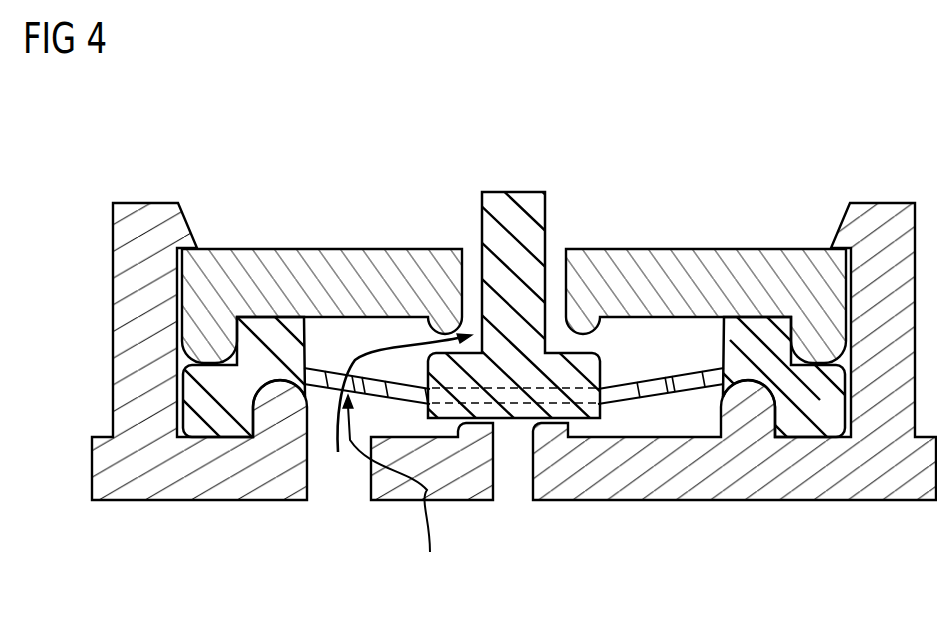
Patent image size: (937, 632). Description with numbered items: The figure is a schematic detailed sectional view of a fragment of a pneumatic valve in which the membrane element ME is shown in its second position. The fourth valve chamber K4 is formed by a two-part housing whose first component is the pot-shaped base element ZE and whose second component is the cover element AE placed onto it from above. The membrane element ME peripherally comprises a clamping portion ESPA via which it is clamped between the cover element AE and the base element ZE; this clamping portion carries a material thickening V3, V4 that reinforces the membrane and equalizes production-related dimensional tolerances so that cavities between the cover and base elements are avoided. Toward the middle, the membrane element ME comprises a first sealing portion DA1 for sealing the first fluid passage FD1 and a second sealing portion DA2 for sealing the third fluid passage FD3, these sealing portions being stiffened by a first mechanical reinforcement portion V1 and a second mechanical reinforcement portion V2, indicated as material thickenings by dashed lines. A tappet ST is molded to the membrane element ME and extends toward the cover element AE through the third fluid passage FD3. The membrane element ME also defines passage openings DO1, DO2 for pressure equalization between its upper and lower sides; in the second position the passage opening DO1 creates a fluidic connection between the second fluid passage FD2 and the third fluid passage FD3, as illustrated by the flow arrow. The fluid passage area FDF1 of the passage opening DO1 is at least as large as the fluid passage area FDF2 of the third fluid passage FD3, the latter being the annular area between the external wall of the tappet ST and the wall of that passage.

The base element ZE is at (137, 302).
The cover element AE is at (345, 282).
The tappet ST is at (510, 210).
The material thickening V4 is at (272, 340).
The material thickening V3 is at (215, 408).
The membrane element ME is at (222, 387).
The clamping portion ESPA is at (216, 326).
The fluid passage area FDF2 is at (473, 264).
The fluid passage area FDF1 is at (404, 488).
The passage opening DO1 is at (333, 384).
The passage opening DO2 is at (683, 383).
The fourth valve chamber K4 is at (670, 410).
The second mechanical reinforcement portion V2 is at (527, 412).
The first mechanical reinforcement portion V1 is at (560, 373).
The second sealing portion DA2 is at (606, 336).
The first sealing portion DA1 is at (604, 438).
The third fluid passage FD3 is at (555, 263).
The second fluid passage FD2 is at (322, 477).
The first fluid passage FD1 is at (508, 477).